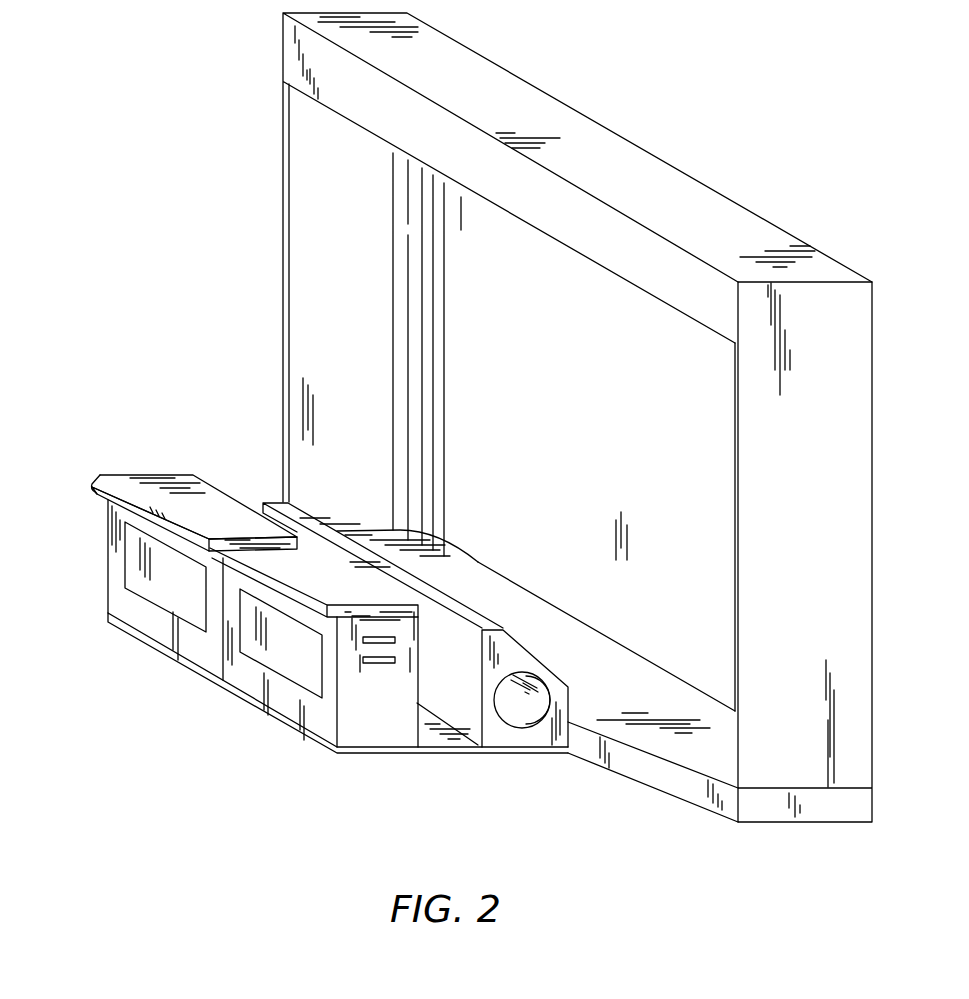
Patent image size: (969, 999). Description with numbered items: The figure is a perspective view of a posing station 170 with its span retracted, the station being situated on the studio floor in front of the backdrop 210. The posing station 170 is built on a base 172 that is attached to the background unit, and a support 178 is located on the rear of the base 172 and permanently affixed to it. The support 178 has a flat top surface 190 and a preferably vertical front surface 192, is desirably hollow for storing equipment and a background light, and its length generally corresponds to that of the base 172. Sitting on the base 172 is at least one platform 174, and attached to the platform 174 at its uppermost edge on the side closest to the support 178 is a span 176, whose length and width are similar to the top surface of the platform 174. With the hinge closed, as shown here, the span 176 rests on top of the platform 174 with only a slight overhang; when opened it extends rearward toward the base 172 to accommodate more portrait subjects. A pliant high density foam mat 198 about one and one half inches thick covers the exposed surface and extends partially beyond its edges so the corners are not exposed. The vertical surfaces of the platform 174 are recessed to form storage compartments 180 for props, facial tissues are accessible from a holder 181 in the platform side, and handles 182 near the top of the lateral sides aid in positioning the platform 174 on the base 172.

The posing station 170 is at (185, 432).
The base 172 is at (433, 743).
The platform 174 is at (232, 668).
The span 176 is at (155, 482).
The support 178 is at (527, 665).
The storage compartment 180 is at (128, 567).
The holder 181 is at (396, 661).
The handle 182 is at (366, 640).
The flat top surface 190 is at (450, 600).
The front surface 192 is at (462, 732).
The foam mat 198 is at (92, 487).
The backdrop 210 is at (552, 394).